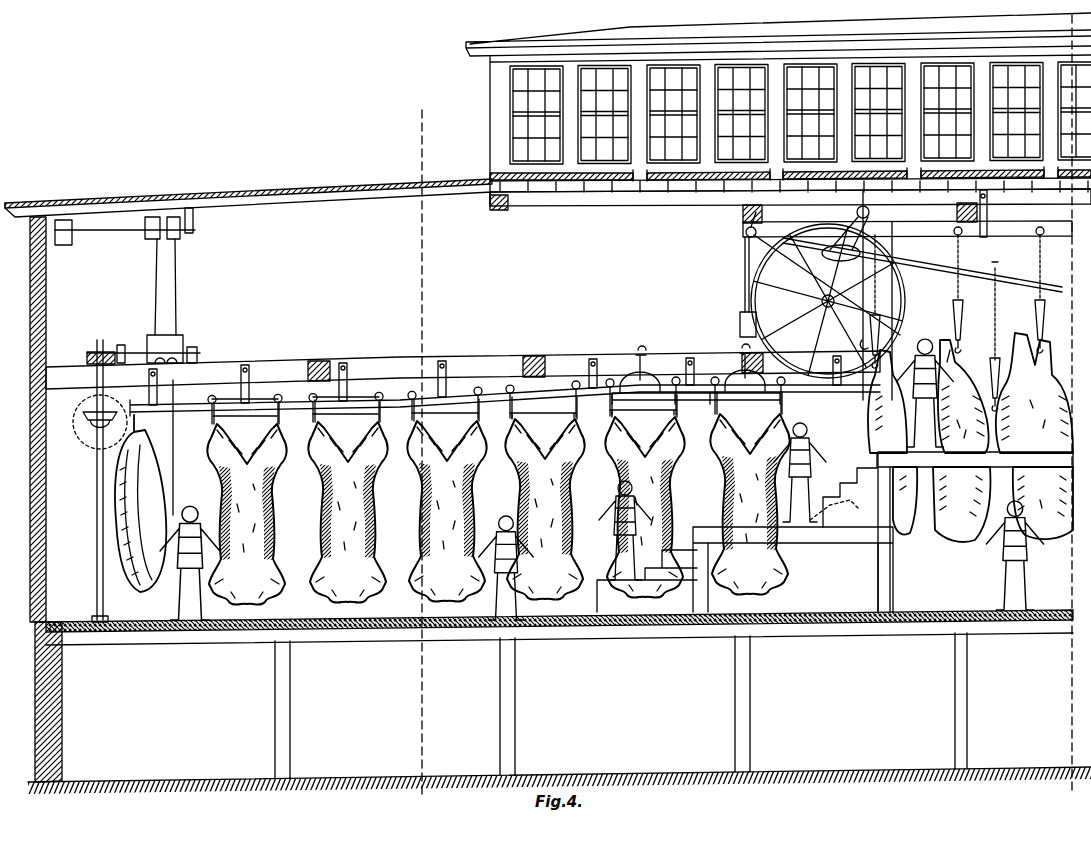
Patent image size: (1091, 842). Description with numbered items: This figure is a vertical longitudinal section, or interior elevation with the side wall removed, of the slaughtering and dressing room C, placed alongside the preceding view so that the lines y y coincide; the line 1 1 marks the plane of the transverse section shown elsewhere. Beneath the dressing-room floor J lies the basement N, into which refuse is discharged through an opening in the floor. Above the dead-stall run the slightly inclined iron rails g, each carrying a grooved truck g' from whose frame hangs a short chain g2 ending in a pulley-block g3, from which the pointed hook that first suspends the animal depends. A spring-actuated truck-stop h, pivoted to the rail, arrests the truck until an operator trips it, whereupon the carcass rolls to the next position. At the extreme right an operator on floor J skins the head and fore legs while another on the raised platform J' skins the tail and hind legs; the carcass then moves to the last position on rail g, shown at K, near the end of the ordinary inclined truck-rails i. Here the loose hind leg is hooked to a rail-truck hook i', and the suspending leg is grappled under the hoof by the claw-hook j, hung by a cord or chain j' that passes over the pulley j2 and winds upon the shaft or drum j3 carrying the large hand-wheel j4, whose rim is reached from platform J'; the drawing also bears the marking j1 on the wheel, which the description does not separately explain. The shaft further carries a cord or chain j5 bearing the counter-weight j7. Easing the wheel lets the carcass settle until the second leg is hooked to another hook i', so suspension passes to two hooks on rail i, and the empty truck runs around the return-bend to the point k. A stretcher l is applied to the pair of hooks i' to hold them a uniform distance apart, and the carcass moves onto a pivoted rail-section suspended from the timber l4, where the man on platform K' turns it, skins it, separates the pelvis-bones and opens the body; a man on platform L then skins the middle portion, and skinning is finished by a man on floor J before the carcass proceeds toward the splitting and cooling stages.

The section line 1 1 is at (418, 452).
The line y y is at (1071, 406).
The slaughtering and dressing room C is at (556, 449).
The basement N is at (315, 522).
The truck-stop h is at (619, 323).
The truck-rails i is at (510, 389).
The rail-truck hooks i' is at (345, 424).
The stretcher l is at (593, 413).
The timber l4 is at (629, 374).
The floor J is at (559, 619).
The platform L is at (647, 581).
The last position on rail g K is at (793, 508).
The platform K' is at (843, 490).
The platform J' is at (975, 520).
The return point k is at (925, 265).
The hoisting wheel j1 is at (828, 301).
The hand-wheel j4 is at (841, 301).
The shaft or drum j3 is at (856, 228).
The pulley j2 is at (863, 301).
The claw-hook j is at (857, 344).
The cord or chain j' is at (813, 273).
The cord or chain j5 is at (739, 274).
The counter-weight j7 is at (739, 321).
The inclined iron rails g is at (966, 297).
The grooved truck g' is at (1002, 259).
The short chain g2 is at (970, 331).
The pulley-block g3 is at (1017, 355).